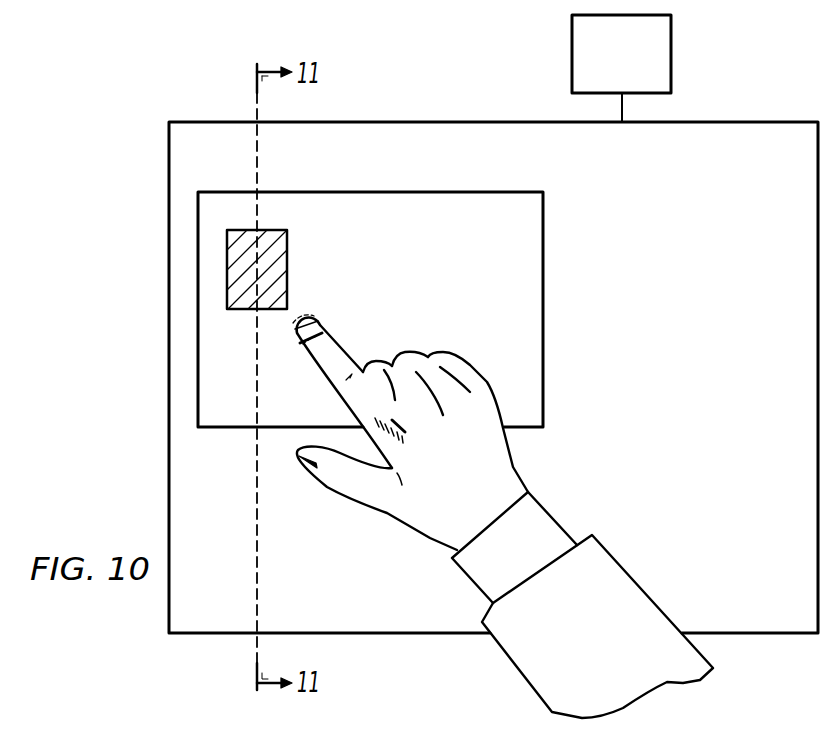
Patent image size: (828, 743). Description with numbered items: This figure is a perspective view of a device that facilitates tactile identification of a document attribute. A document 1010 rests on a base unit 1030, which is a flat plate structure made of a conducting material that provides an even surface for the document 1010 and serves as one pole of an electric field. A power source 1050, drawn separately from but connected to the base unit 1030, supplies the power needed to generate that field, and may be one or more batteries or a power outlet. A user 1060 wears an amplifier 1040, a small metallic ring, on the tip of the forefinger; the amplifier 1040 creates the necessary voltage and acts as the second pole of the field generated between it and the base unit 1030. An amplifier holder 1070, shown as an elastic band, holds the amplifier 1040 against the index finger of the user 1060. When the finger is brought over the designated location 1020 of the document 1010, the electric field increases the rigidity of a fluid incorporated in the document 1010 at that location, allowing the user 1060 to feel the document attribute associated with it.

The document 1010 is at (543, 279).
The designated location 1020 is at (227, 268).
The base unit 1030 is at (169, 465).
The amplifier 1040 is at (321, 343).
The power source 1050 is at (671, 53).
The user 1060 is at (552, 518).
The amplifier holder 1070 is at (320, 324).